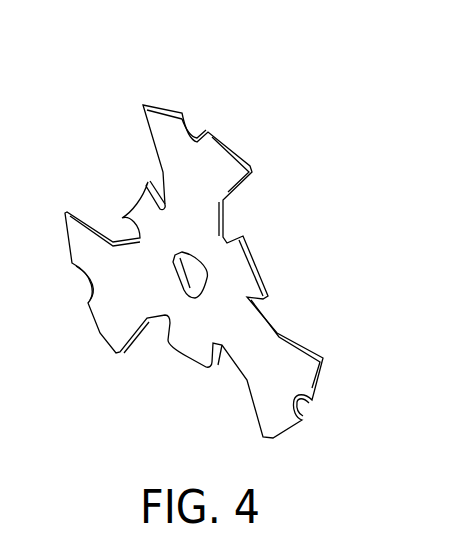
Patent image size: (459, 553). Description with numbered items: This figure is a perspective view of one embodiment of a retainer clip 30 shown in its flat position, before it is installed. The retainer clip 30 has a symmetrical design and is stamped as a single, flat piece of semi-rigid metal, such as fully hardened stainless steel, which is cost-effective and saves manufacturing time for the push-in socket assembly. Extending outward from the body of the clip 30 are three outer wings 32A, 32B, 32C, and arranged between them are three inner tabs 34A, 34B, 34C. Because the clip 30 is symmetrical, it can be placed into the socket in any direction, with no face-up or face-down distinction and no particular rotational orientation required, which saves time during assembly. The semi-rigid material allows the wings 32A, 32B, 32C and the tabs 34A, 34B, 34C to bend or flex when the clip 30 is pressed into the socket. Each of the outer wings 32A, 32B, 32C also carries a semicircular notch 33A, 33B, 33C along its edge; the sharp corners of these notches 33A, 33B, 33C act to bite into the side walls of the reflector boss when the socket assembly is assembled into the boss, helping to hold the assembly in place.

The retainer clip 30 is at (116, 65).
The outer wing 32A is at (223, 158).
The outer wing 32B is at (308, 382).
The outer wing 32C is at (110, 333).
The semicircular notch 33A is at (190, 130).
The semicircular notch 33B is at (300, 405).
The semicircular notch 33C is at (90, 288).
The inner tab 34A is at (248, 268).
The inner tab 34B is at (190, 348).
The inner tab 34C is at (133, 205).